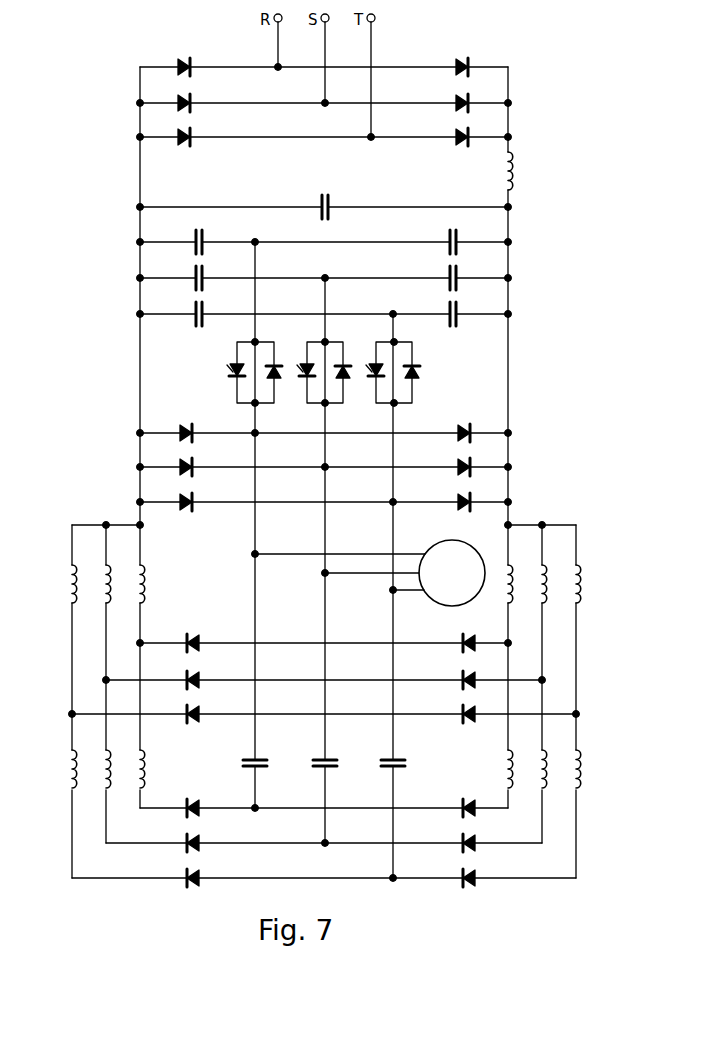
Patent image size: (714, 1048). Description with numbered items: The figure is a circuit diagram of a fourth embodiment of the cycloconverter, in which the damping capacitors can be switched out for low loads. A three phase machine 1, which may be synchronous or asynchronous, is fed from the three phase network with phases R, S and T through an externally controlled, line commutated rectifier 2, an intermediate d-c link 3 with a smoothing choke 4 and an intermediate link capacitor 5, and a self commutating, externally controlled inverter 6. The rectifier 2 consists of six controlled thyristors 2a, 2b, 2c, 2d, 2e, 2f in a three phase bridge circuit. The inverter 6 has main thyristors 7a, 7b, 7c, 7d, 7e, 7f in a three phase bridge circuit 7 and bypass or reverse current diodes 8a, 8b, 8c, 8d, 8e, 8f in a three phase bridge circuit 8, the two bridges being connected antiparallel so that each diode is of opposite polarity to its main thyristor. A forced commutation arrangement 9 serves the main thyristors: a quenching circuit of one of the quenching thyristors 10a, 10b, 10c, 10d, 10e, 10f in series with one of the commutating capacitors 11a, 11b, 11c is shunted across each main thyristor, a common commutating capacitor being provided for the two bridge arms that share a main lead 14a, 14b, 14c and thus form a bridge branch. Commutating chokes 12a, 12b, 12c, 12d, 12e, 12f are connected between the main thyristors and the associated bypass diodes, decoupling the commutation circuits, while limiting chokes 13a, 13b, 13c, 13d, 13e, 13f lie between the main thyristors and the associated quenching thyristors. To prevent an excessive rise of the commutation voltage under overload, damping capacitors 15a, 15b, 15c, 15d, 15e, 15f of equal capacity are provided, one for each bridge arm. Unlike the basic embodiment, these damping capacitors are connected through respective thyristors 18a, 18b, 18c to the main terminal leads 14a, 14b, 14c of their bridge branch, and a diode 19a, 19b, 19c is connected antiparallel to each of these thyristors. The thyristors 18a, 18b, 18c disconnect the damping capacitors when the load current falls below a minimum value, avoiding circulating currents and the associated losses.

The three phase machine 1 is at (431, 600).
The rectifier 2 is at (324, 103).
The controlled thyristor 2a is at (194, 72).
The controlled thyristor 2b is at (194, 108).
The controlled thyristor 2c is at (194, 142).
The controlled thyristor 2d is at (456, 70).
The controlled thyristor 2e is at (456, 106).
The controlled thyristor 2f is at (456, 140).
The intermediate d-c link 3 is at (324, 182).
The smoothing choke 4 is at (514, 178).
The intermediate link capacitor 5 is at (329, 212).
The inverter 6 is at (324, 472).
The three phase bridge circuit 7 is at (324, 679).
The main thyristor 7a is at (196, 648).
The main thyristor 7b is at (196, 685).
The main thyristor 7c is at (196, 719).
The main thyristor 7d is at (458, 647).
The main thyristor 7e is at (458, 684).
The main thyristor 7f is at (458, 718).
The three phase bridge circuit 8 is at (324, 468).
The bypass diode 8a is at (196, 438).
The bypass diode 8b is at (196, 472).
The bypass diode 8c is at (196, 507).
The bypass diode 8d is at (458, 437).
The bypass diode 8e is at (458, 471).
The bypass diode 8f is at (458, 506).
The forced commutation arrangement 9 is at (324, 843).
The quenching thyristor 10a is at (196, 813).
The quenching thyristor 10b is at (196, 848).
The quenching thyristor 10c is at (194, 884).
The quenching thyristor 10d is at (458, 812).
The quenching thyristor 10e is at (458, 847).
The quenching thyristor 10f is at (458, 884).
The commutating capacitor 11a is at (259, 758).
The commutating capacitor 11b is at (329, 758).
The commutating capacitor 11c is at (398, 769).
The commutating choke 12a is at (147, 575).
The commutating choke 12b is at (110, 570).
The commutating choke 12c is at (70, 578).
The commutating choke 12d is at (505, 570).
The commutating choke 12e is at (546, 570).
The commutating choke 12f is at (580, 577).
The limiting choke 13a is at (148, 772).
The limiting choke 13b is at (104, 760).
The limiting choke 13c is at (68, 772).
The limiting choke 13d is at (503, 767).
The limiting choke 13e is at (548, 760).
The limiting choke 13f is at (584, 768).
The main lead 14a is at (258, 436).
The main lead 14b is at (328, 470).
The main lead 14c is at (390, 506).
The damping capacitor 15a is at (205, 243).
The damping capacitor 15b is at (205, 279).
The damping capacitor 15c is at (205, 315).
The damping capacitor 15d is at (448, 243).
The damping capacitor 15e is at (448, 279).
The damping capacitor 15f is at (448, 315).
The thyristor 18a is at (230, 376).
The thyristor 18b is at (302, 366).
The thyristor 18c is at (371, 366).
The diode 19a is at (277, 378).
The diode 19b is at (346, 378).
The diode 19c is at (415, 378).